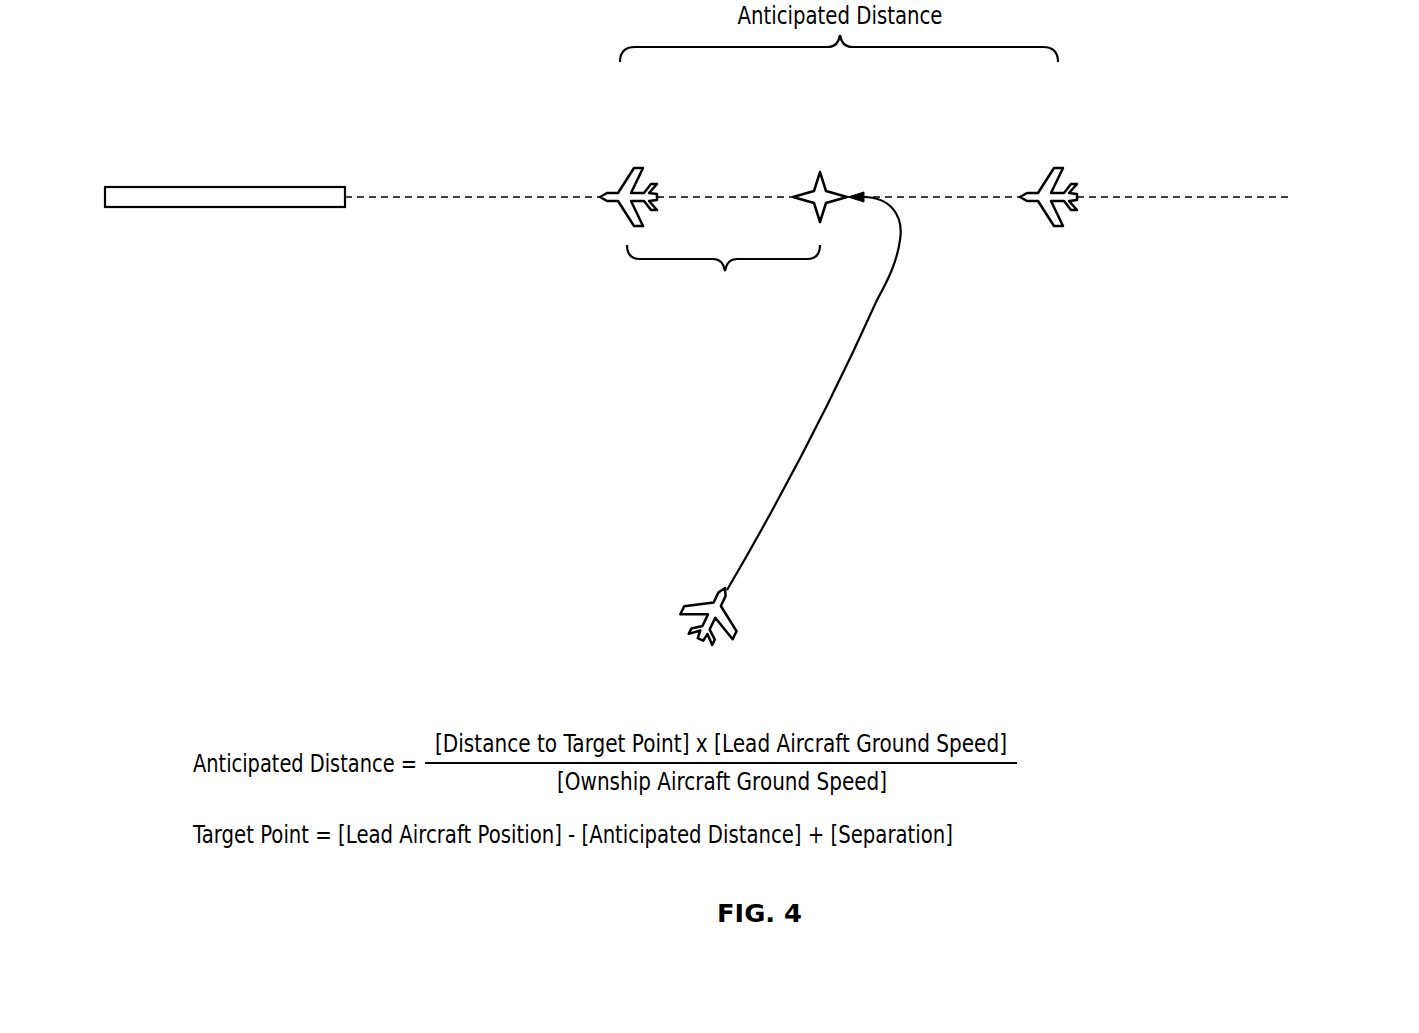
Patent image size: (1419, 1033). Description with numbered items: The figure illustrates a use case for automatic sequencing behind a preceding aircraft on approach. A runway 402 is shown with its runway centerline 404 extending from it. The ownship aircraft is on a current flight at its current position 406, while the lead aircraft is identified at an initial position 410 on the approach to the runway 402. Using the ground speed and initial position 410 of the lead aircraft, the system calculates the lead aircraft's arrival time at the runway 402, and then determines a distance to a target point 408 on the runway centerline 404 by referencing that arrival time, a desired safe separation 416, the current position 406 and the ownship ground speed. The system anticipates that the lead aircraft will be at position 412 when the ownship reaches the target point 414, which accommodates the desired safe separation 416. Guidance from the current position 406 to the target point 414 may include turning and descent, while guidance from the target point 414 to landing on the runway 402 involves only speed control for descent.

The runway 402 is at (275, 207).
The runway centerline 404 is at (405, 196).
The current position 406 is at (733, 610).
The distance to a target point 408 is at (855, 433).
The initial position 410 is at (1042, 212).
The position 412 is at (623, 212).
The target point 414 is at (817, 122).
The desired safe separation 416 is at (720, 303).